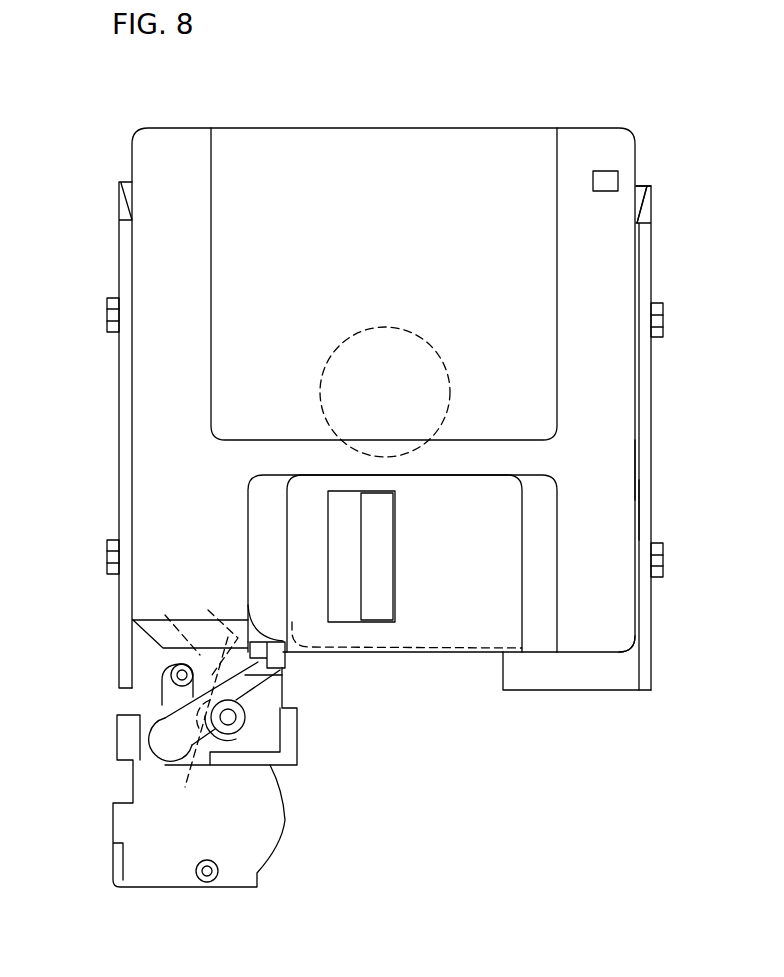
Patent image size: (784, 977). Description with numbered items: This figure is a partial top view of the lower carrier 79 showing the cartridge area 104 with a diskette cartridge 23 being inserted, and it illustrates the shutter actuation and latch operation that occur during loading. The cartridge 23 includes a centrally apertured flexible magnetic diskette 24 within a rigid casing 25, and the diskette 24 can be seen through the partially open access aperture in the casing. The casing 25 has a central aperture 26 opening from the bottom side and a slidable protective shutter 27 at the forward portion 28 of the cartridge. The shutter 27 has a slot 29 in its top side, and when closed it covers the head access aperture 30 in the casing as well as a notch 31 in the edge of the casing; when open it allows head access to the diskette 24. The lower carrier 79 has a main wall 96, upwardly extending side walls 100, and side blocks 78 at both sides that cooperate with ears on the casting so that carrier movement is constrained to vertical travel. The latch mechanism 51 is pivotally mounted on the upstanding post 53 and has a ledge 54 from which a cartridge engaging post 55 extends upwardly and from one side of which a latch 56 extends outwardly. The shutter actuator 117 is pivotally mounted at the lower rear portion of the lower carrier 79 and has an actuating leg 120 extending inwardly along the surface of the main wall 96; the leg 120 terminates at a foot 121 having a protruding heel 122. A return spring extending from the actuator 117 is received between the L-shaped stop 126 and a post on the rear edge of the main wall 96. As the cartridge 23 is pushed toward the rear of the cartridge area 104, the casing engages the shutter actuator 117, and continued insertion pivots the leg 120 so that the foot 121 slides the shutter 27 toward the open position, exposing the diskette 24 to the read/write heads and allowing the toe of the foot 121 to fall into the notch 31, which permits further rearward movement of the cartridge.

The diskette cartridge 23 is at (410, 140).
The flexible magnetic diskette 24 is at (383, 518).
The casing 25 is at (627, 458).
The central aperture 26 is at (428, 340).
The shutter 27 is at (523, 477).
The forward portion 28 is at (602, 642).
The slot 29 is at (340, 515).
The head access aperture 30 is at (390, 565).
The notch 31 is at (398, 641).
The latch mechanism 51 is at (200, 722).
The upstanding post 53 is at (232, 717).
The ledge 54 is at (173, 625).
The cartridge engaging post 55 is at (172, 672).
The latch 56 is at (211, 635).
The side block 78 is at (110, 316).
The lower carrier 79 is at (645, 513).
The main wall 96 is at (513, 680).
The side wall 100 is at (128, 441).
The cartridge area 104 is at (636, 186).
The shutter actuator 117 is at (153, 737).
The actuating leg 120 is at (247, 680).
The foot 121 is at (262, 620).
The heel 122 is at (281, 667).
The L-shaped stop 126 is at (287, 760).